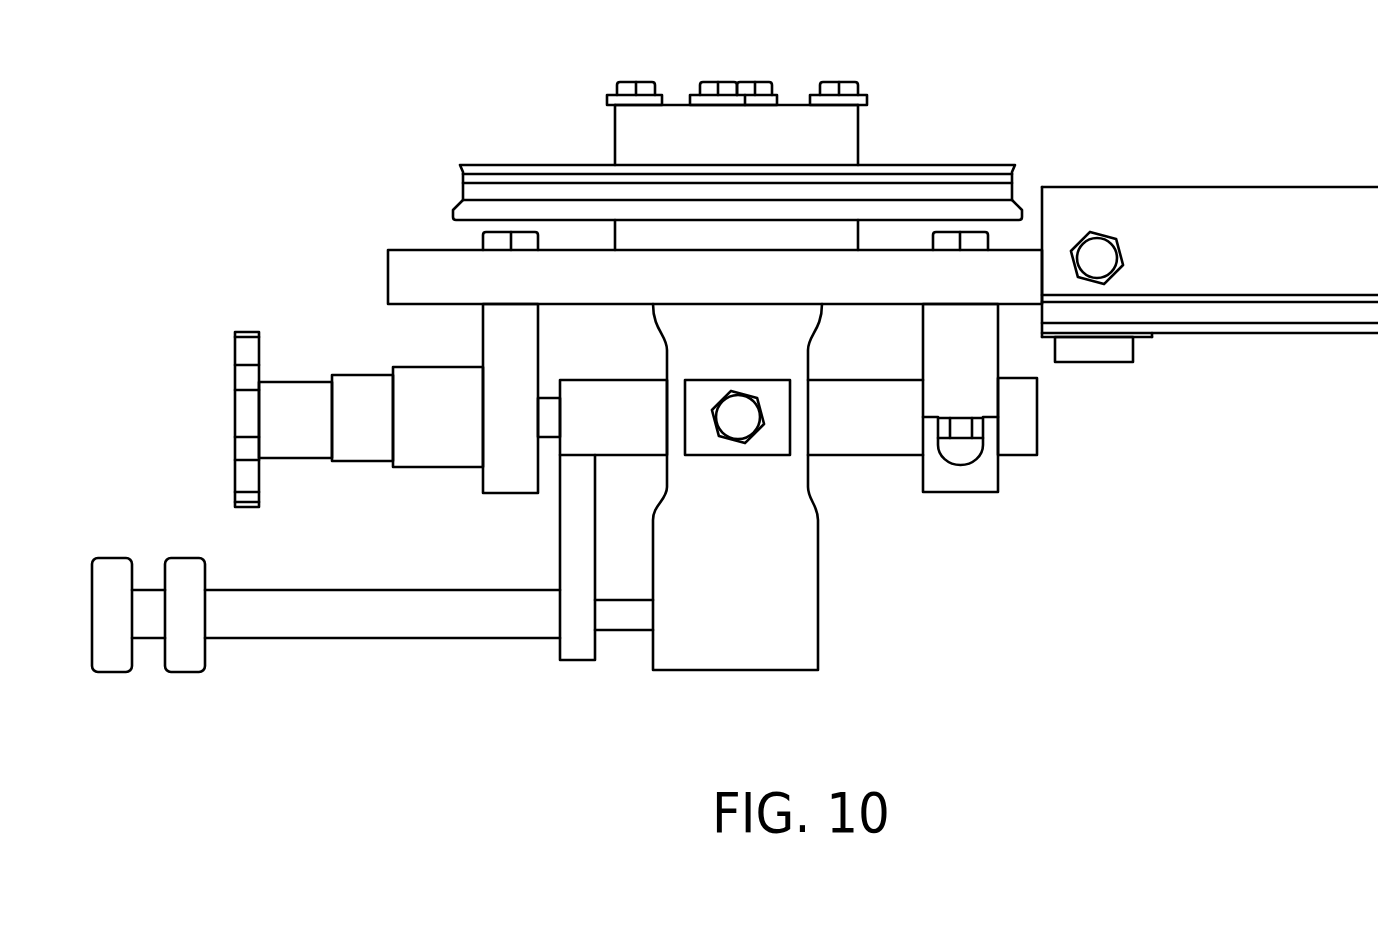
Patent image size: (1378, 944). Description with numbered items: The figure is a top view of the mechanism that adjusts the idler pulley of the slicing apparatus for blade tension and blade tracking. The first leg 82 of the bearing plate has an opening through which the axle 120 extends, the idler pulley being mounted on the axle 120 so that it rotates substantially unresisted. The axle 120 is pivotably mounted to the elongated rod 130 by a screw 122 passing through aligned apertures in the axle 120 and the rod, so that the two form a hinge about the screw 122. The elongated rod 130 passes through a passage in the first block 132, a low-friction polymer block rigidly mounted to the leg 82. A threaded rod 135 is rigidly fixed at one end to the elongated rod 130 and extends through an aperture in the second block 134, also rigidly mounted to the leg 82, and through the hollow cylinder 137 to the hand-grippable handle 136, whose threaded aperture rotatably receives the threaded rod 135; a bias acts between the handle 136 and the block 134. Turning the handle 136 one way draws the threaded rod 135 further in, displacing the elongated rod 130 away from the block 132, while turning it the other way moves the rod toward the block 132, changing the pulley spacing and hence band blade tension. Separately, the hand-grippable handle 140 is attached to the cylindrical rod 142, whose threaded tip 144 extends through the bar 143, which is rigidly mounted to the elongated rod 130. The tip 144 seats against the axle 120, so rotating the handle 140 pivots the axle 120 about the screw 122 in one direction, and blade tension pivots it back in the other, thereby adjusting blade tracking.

The first leg 82 is at (423, 277).
The axle 120 is at (812, 497).
The screw 122 is at (742, 413).
The elongated rod 130 is at (583, 398).
The first block 132 is at (983, 475).
The second block 134 is at (513, 473).
The threaded rod 135 is at (552, 393).
The hand-grippable handle 136 is at (244, 330).
The hollow cylinder 137 is at (374, 491).
The hand-grippable handle 140 is at (112, 558).
The cylindrical rod 142 is at (273, 638).
The bar 143 is at (578, 648).
The threaded tip 144 is at (627, 633).